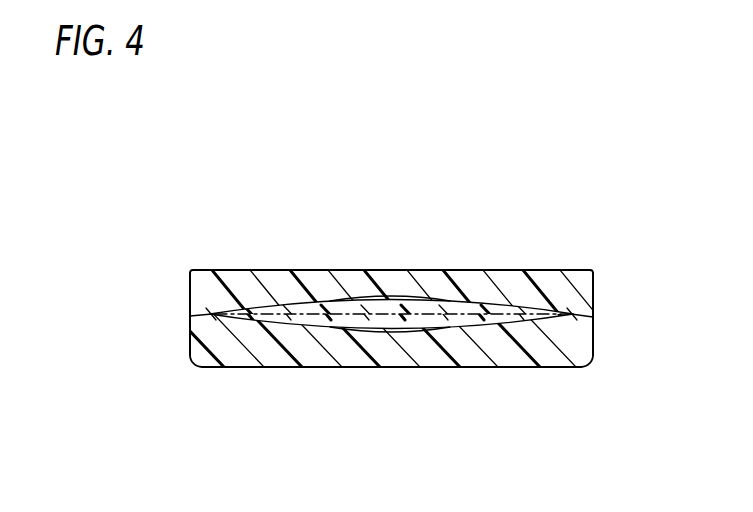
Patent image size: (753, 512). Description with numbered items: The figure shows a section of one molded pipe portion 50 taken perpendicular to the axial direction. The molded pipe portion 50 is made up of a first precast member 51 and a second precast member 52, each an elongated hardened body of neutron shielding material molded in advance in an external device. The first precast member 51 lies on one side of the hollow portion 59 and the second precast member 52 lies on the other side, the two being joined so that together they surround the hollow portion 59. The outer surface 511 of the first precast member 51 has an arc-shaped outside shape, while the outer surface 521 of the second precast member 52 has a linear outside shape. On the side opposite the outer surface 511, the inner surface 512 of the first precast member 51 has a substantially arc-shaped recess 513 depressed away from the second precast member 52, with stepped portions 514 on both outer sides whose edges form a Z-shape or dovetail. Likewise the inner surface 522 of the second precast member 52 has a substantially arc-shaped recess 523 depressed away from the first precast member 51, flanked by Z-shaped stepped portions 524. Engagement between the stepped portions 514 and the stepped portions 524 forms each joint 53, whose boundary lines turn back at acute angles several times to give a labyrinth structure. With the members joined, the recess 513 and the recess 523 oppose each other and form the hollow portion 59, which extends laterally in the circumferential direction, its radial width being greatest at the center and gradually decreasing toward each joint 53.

The molded pipe portion 50 is at (521, 174).
The first precast member 51 is at (247, 285).
The second precast member 52 is at (250, 350).
The outer surface of the first precast member 511 is at (522, 267).
The outer surface of the second precast member 521 is at (540, 368).
The stepped portions 514 is at (208, 318).
The joint 53 is at (190, 316).
The stepped portions 524 is at (208, 311).
The inner surface of the second precast member 522 is at (353, 324).
The recess 523 is at (388, 322).
The inner surface of the first precast member 512 is at (460, 301).
The recess 513 is at (423, 300).
The hollow portion 59 is at (403, 302).